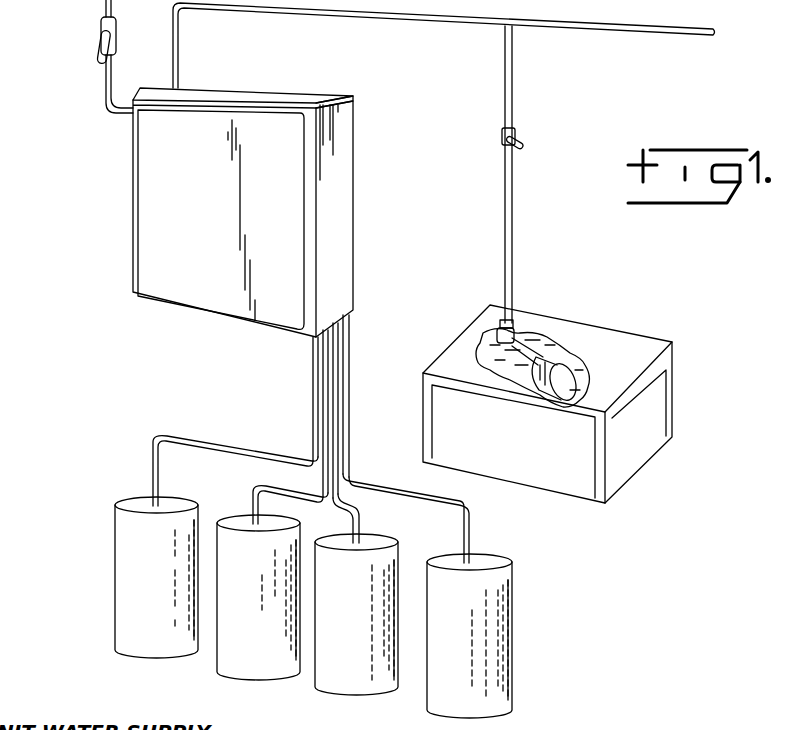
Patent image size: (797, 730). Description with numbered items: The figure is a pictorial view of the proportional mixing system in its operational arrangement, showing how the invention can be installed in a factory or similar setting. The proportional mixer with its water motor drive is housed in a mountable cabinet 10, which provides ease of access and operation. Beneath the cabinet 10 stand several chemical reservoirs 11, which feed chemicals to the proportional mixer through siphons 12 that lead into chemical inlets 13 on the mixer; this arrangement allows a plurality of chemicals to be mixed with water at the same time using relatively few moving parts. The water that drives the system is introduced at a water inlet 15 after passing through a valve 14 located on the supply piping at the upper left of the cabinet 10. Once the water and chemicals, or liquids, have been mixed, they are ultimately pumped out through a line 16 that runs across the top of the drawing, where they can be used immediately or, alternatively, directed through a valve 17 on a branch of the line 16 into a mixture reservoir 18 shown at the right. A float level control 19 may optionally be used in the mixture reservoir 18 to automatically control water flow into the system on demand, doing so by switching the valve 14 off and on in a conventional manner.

The mountable cabinet 10 is at (185, 287).
The chemical reservoirs 11 is at (222, 656).
The siphons 12 is at (253, 510).
The chemical inlets 13 is at (348, 398).
The valve 14 is at (100, 23).
The water inlet 15 is at (103, 87).
The line 16 is at (380, 17).
The valve 17 is at (500, 136).
The mixture reservoir 18 is at (648, 348).
The float level control 19 is at (557, 368).